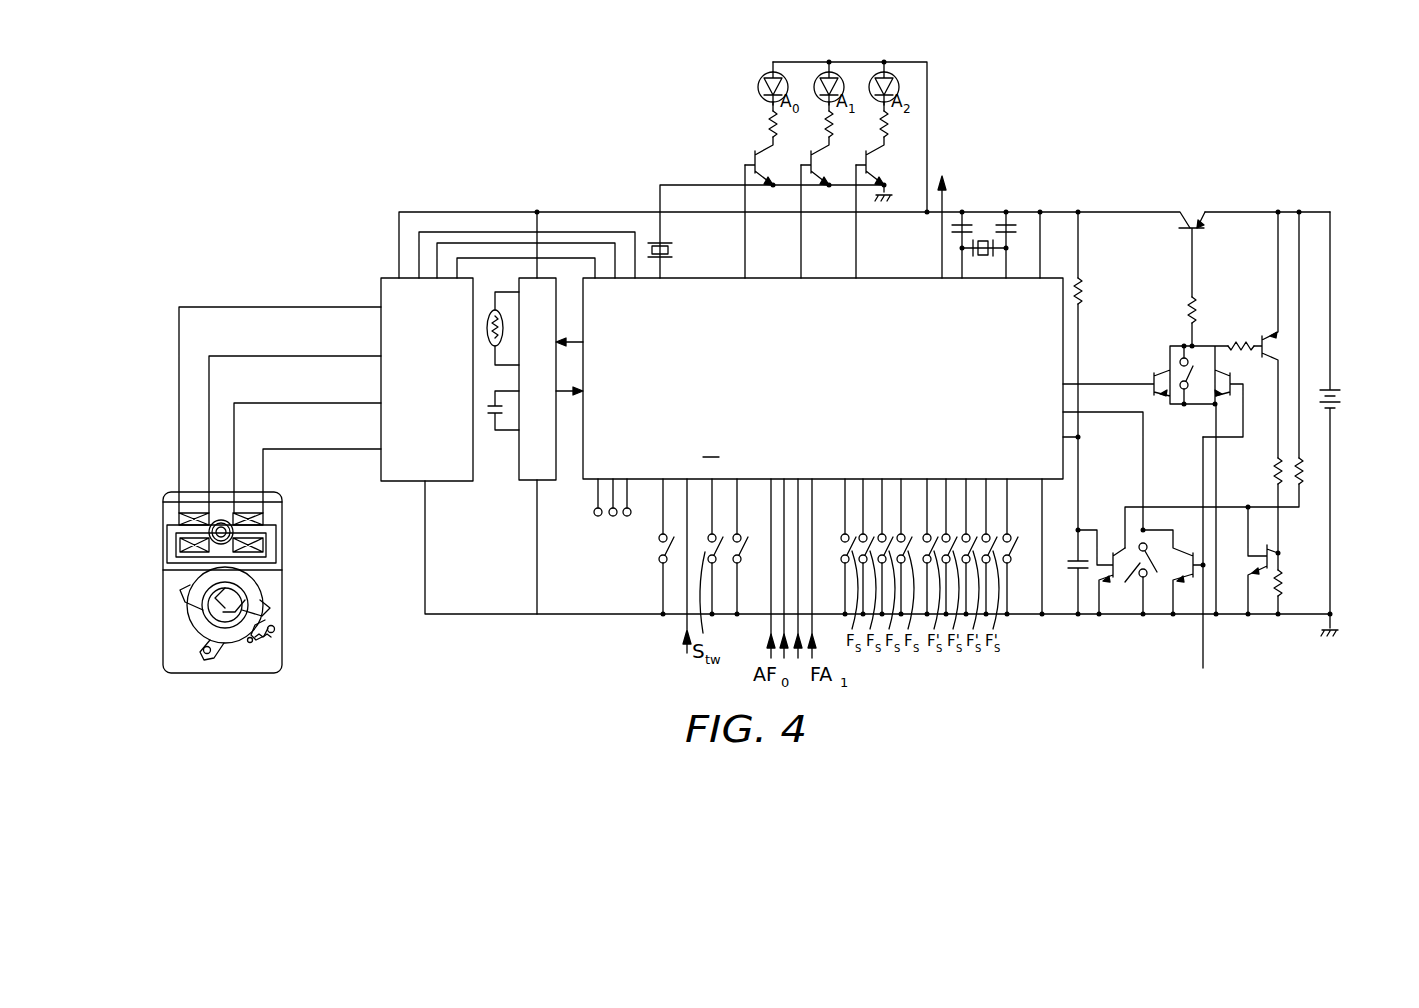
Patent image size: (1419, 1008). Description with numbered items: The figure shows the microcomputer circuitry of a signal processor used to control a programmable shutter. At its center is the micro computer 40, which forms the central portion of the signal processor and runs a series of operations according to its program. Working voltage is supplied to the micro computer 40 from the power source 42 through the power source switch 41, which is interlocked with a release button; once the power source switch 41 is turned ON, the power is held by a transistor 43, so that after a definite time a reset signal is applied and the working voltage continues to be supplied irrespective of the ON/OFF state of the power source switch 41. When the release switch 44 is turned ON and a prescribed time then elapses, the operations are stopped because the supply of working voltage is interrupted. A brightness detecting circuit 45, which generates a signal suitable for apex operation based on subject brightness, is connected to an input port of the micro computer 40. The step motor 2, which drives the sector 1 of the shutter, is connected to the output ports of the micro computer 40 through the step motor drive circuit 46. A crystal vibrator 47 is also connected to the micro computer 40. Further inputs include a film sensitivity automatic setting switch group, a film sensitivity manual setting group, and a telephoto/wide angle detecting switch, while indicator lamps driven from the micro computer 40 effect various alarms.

The sector 1 is at (268, 587).
The step motor 2 is at (273, 513).
The micro computer 40 is at (688, 277).
The power source switch 41 is at (1193, 375).
The power source 42 is at (1343, 401).
The transistor 43 is at (1154, 369).
The release switch 44 is at (1140, 572).
The brightness detecting circuit 45 is at (525, 482).
The step motor drive circuit 46 is at (407, 482).
The crystal vibrator 47 is at (980, 232).